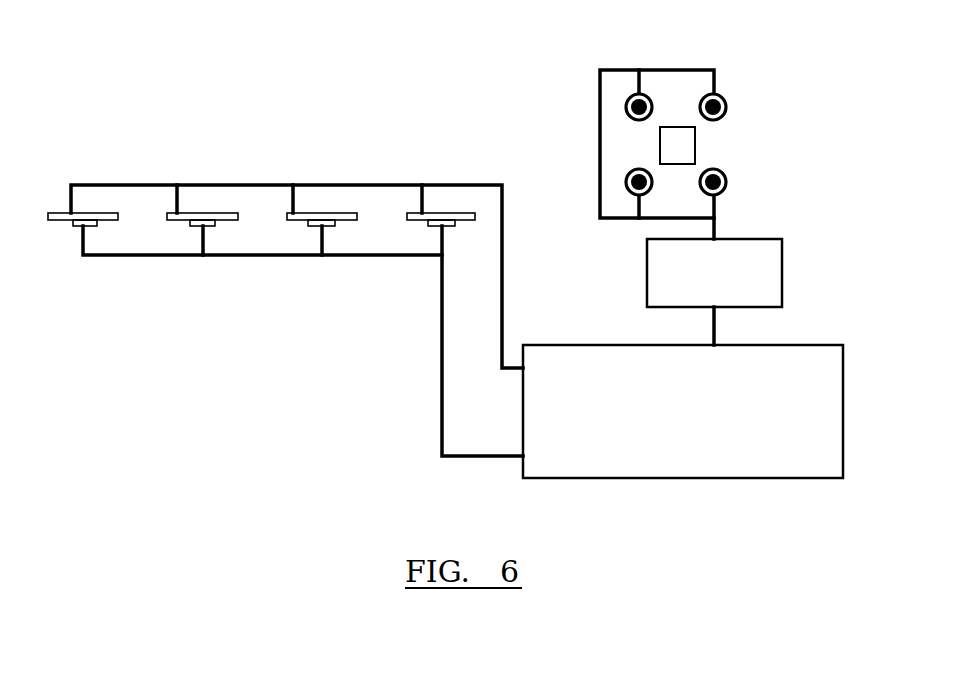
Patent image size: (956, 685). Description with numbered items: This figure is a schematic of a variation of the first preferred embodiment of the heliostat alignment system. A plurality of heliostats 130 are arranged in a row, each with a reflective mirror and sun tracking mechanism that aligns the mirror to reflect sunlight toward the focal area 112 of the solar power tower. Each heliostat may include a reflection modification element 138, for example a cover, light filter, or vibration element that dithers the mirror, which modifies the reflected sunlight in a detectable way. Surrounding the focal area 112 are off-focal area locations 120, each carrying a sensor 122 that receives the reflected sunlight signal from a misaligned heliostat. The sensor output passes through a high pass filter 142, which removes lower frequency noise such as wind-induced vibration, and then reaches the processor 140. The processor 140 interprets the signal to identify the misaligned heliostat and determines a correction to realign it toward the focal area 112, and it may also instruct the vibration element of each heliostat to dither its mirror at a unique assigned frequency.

The focal area 112 is at (648, 141).
The off-focal area location 120 is at (700, 88).
The sensor 122 is at (722, 119).
The heliostats 130 is at (280, 280).
The reflection modification element 138 is at (79, 236).
The processor 140 is at (683, 411).
The high pass filter 142 is at (714, 273).